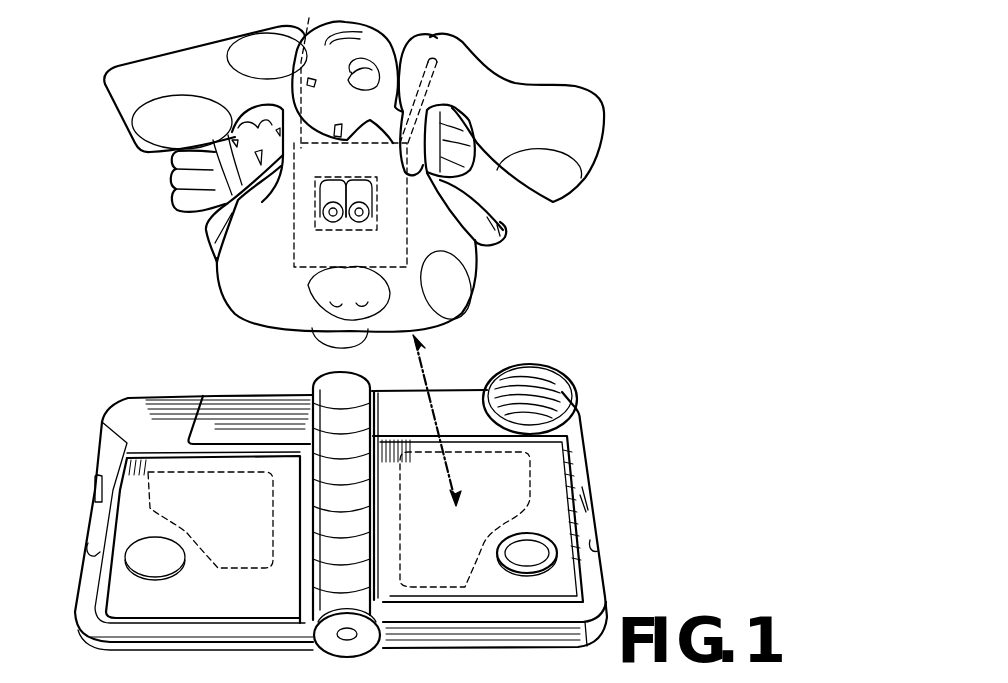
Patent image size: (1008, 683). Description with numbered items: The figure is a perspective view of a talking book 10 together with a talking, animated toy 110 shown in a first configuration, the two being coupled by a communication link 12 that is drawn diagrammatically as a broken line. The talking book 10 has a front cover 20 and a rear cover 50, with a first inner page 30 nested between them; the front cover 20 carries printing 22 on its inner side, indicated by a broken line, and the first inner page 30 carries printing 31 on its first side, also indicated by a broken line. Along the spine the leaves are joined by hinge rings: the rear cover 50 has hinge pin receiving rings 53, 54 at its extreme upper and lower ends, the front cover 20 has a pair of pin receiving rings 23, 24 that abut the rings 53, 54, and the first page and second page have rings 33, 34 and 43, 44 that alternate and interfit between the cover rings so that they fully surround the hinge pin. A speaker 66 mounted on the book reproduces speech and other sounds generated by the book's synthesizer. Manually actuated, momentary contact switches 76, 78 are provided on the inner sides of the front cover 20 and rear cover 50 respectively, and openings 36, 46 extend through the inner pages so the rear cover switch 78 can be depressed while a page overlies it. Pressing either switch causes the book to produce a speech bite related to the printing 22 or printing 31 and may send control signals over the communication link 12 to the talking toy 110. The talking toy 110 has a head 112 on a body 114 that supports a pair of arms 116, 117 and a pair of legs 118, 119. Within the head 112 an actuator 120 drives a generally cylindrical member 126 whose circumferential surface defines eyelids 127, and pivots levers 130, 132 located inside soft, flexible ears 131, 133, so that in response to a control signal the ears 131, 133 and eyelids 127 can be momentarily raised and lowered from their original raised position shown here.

The talking book 10 is at (592, 478).
The communication link 12 is at (449, 412).
The front cover 20 is at (157, 412).
The printing 22 is at (247, 545).
The pin receiving ring 23 is at (354, 426).
The pin receiving ring 24 is at (354, 566).
The first inner page 30 is at (485, 581).
The printing 31 is at (443, 548).
The pin receiving ring 33 is at (354, 478).
The pin receiving ring 34 is at (354, 540).
The opening 36 is at (520, 534).
The pin receiving ring 43 is at (354, 452).
The pin receiving ring 44 is at (354, 504).
The opening 46 is at (533, 551).
The rear cover 50 is at (592, 538).
The hinge pin receiving ring 53 is at (354, 405).
The hinge pin receiving ring 54 is at (354, 600).
The speaker 66 is at (573, 380).
The momentary contact switch 76 is at (147, 557).
The momentary contact switch 78 is at (530, 560).
The talking toy figure 110 is at (599, 100).
The head 112 is at (228, 287).
The body 114 is at (268, 118).
The arm 116 is at (503, 232).
The arm 117 is at (205, 236).
The leg 118 is at (466, 162).
The leg 119 is at (187, 203).
The actuator 120 is at (392, 242).
The cylindrical member 126 is at (383, 234).
The eyelids 127 is at (358, 188).
The lever 130 is at (437, 60).
The ear 131 is at (528, 97).
The lever 132 is at (308, 74).
The ear 133 is at (195, 63).